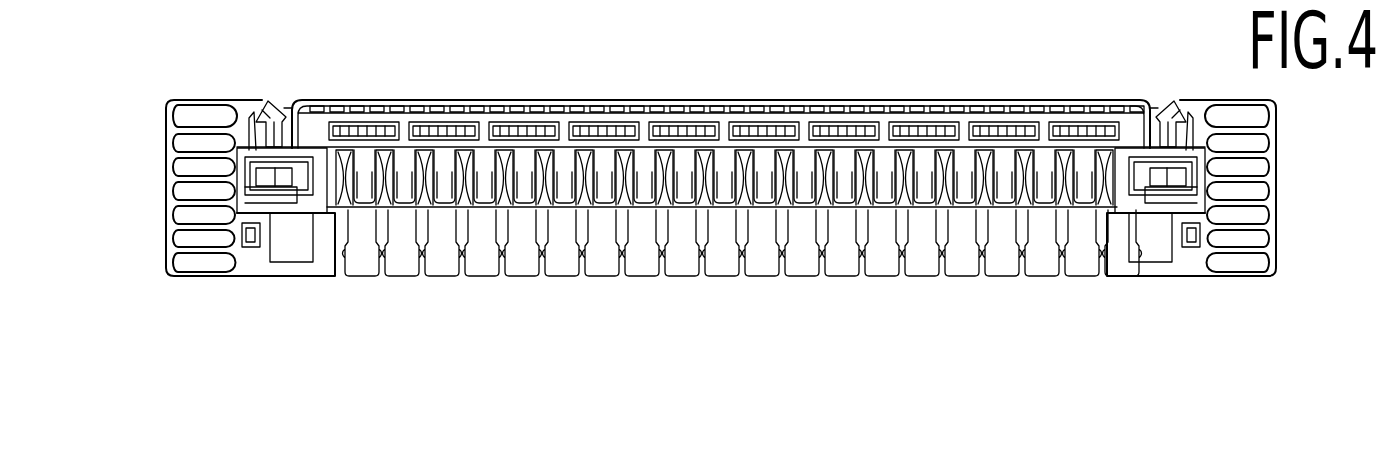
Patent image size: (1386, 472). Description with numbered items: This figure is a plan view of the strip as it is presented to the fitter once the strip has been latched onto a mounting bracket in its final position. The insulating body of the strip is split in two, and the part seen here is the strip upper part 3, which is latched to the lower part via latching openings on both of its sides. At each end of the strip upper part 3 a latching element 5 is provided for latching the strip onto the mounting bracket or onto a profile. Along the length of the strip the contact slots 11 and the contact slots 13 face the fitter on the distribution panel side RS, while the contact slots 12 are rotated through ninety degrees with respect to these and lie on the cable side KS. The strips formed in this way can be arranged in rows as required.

The upper part 3 is at (704, 112).
The latching elements 5 is at (277, 101).
The contact slots 11 is at (724, 134).
The contact slots 12 is at (742, 294).
The contact slots 13 is at (522, 128).
The distribution panel side RS is at (963, 165).
The cable side KS is at (448, 294).